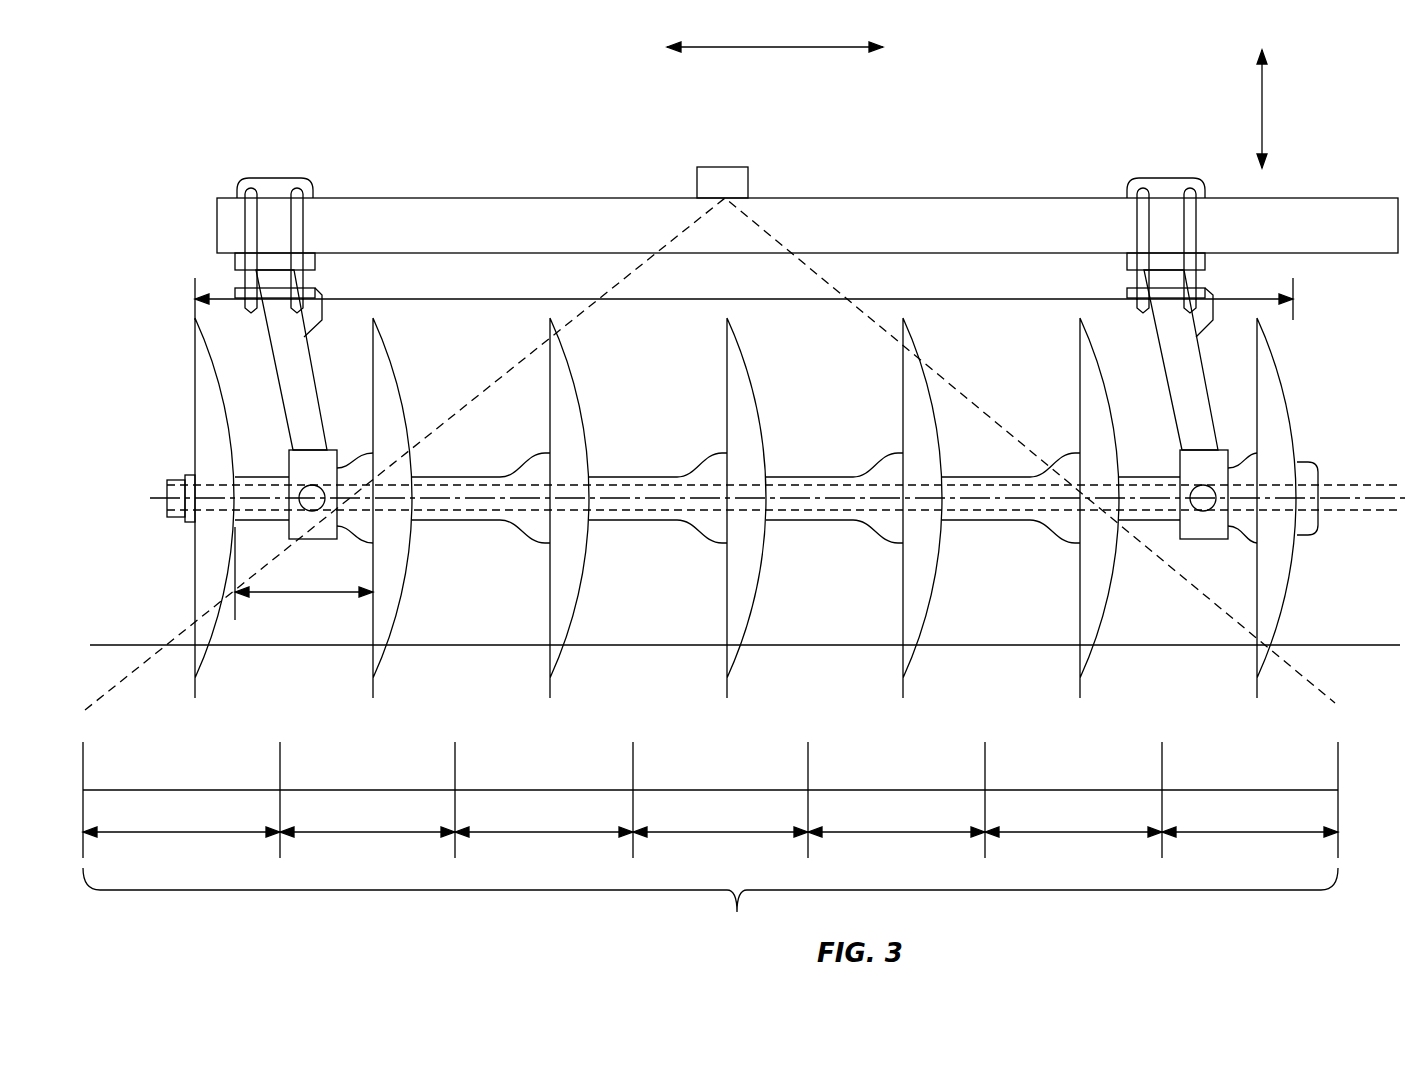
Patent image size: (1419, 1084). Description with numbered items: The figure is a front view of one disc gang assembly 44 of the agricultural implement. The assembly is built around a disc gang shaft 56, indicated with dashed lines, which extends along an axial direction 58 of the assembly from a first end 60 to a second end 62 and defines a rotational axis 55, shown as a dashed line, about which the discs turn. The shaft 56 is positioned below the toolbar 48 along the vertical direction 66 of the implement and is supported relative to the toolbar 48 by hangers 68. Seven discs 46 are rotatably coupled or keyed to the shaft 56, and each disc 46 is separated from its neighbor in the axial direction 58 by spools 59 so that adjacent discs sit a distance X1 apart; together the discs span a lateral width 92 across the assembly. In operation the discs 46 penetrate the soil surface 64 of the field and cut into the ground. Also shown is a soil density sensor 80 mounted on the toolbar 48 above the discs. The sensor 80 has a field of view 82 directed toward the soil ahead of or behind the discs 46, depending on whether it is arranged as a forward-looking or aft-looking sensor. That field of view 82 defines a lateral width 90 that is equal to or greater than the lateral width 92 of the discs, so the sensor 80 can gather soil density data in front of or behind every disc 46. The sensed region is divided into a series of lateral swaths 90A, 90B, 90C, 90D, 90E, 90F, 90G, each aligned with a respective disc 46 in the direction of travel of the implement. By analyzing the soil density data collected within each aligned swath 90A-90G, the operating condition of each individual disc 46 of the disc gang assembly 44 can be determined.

The disc gang assembly 44 is at (233, 148).
The disc 46 is at (195, 698).
The toolbar 48 is at (625, 197).
The rotational axis 55 is at (1375, 515).
The disc gang shaft 56 is at (1163, 522).
The axial direction 58 is at (760, 49).
The spool 59 is at (480, 521).
The first end 60 is at (128, 488).
The second end 62 is at (1330, 482).
The soil surface 64 is at (1335, 645).
The vertical direction 66 is at (1262, 110).
The hanger 68 is at (282, 350).
The soil density sensor 80 is at (748, 183).
The field of view 82 is at (822, 272).
The lateral width of the field of view 90 is at (710, 846).
The lateral swath 90A is at (177, 833).
The lateral swath 90B is at (355, 833).
The lateral swath 90C is at (533, 833).
The lateral swath 90D is at (700, 833).
The lateral swath 90E is at (875, 833).
The lateral swath 90F is at (1047, 833).
The lateral swath 90G is at (1223, 833).
The lateral width across the discs 92 is at (222, 297).
The distance X1 is at (290, 594).